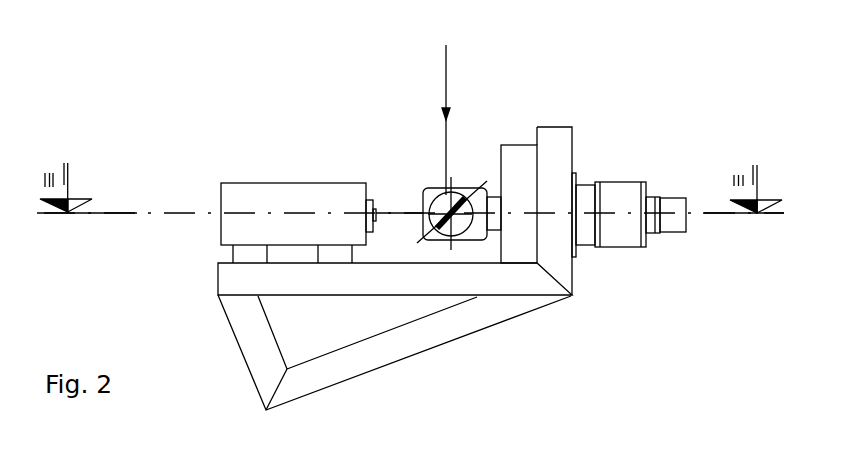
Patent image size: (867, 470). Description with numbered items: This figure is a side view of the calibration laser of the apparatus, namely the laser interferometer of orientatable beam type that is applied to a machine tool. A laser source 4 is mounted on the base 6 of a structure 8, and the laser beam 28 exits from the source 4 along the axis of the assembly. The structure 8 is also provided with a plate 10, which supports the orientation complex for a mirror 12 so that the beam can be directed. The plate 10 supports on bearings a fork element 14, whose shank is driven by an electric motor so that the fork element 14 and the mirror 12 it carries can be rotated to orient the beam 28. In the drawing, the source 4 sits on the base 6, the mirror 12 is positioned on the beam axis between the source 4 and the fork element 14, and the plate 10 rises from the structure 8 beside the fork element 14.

The laser source 4 is at (242, 194).
The base 6 is at (241, 278).
The structure 8 is at (482, 319).
The plate 10 is at (558, 145).
The mirror 12 is at (460, 197).
The fork element 14 is at (495, 205).
The laser beam 28 is at (403, 213).